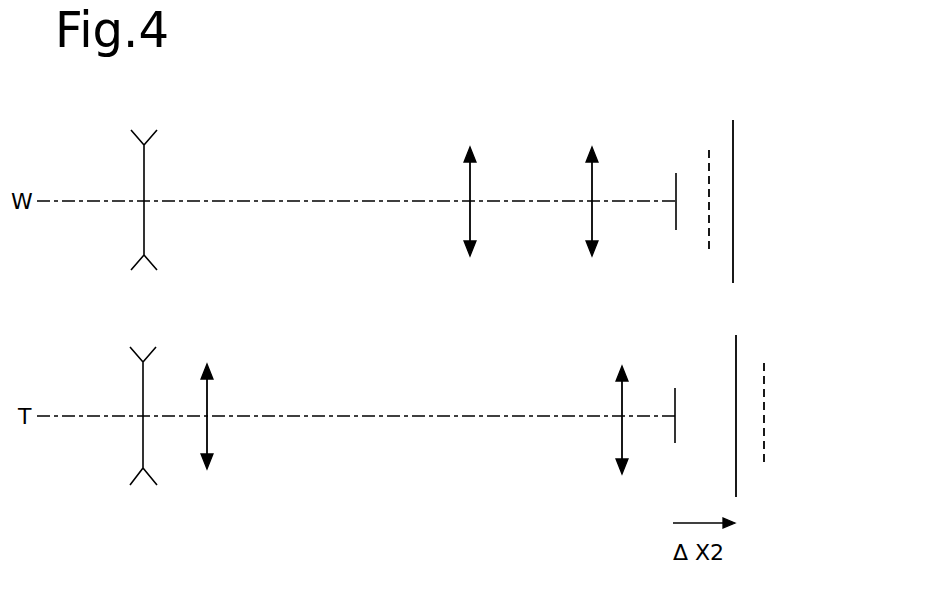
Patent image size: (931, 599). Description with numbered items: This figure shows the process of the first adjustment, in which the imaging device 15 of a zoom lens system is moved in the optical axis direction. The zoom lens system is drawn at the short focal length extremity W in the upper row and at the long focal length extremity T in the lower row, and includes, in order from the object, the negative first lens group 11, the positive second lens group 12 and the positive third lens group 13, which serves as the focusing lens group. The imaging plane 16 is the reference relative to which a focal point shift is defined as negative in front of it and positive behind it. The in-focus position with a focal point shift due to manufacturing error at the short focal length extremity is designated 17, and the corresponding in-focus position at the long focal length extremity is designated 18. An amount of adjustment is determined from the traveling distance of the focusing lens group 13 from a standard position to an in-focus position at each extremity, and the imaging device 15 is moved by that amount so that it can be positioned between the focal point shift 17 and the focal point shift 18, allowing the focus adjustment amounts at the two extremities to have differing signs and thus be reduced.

The negative first lens group 11 is at (157, 150).
The positive second lens group 12 is at (452, 148).
The positive third lens group 13 is at (577, 143).
The imaging device 15 is at (742, 135).
The imaging plane 16 is at (672, 238).
The in-focus position at the short focal length extremity 17 is at (709, 140).
The in-focus position at the long focal length extremity 18 is at (770, 360).